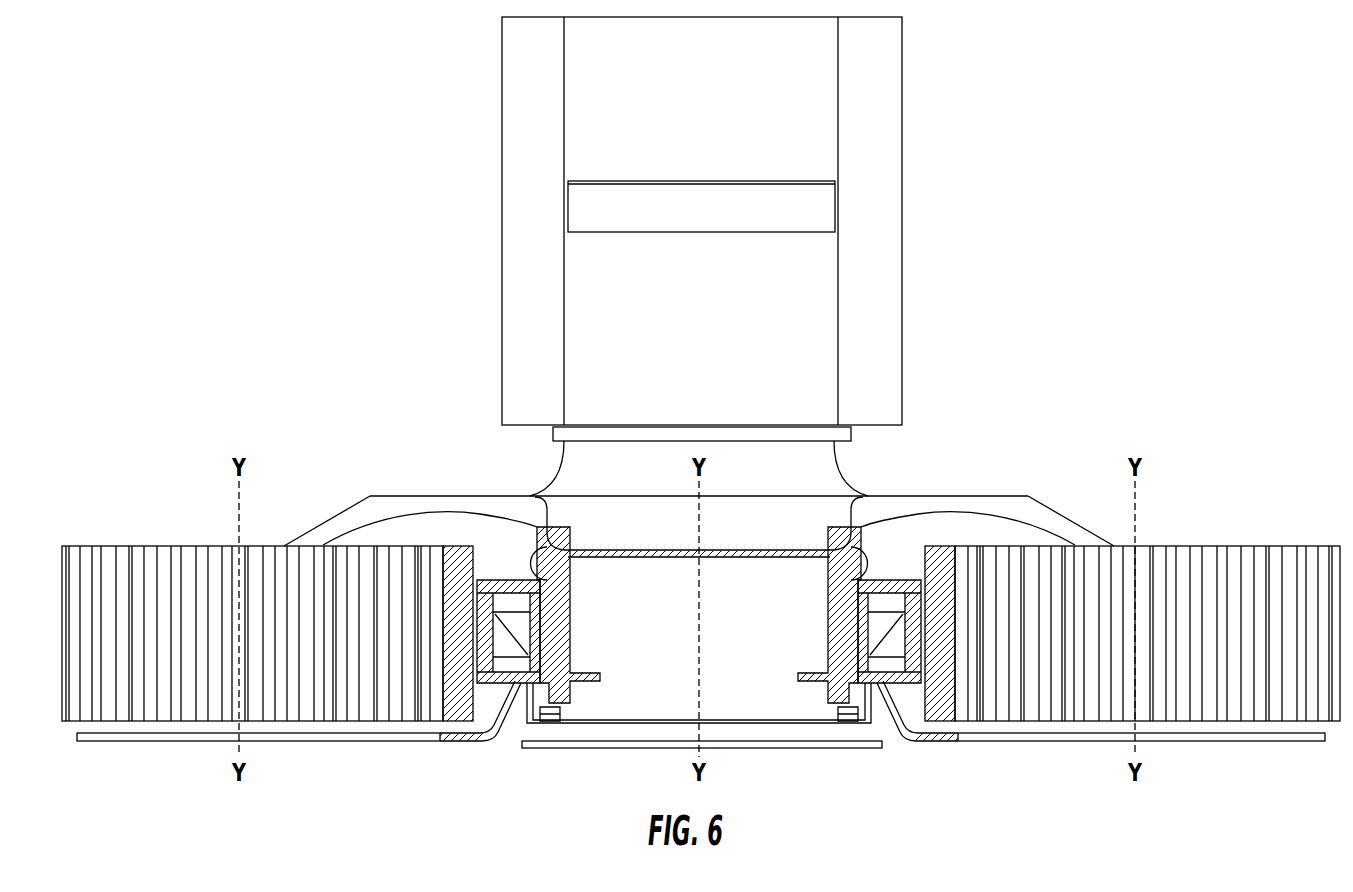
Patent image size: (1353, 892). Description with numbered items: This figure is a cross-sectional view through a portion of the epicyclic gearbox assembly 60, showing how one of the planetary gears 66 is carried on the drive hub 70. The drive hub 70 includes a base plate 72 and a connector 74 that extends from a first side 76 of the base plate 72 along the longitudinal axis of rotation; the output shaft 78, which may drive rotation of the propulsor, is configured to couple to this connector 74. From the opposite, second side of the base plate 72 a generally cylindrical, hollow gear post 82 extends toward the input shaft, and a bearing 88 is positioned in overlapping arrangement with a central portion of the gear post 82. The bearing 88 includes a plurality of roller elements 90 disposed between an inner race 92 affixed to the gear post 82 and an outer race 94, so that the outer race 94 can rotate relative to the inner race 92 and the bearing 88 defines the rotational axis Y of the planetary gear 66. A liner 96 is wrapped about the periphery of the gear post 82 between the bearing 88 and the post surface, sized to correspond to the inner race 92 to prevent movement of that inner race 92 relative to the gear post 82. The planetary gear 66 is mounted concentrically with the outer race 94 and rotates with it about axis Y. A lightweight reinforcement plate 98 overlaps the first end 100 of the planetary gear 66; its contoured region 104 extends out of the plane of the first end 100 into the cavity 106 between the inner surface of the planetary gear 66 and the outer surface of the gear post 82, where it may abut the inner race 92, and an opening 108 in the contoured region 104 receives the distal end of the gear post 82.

The gearbox assembly 60 is at (326, 92).
The planetary gear 66 is at (167, 560).
The drive hub 70 is at (995, 485).
The base plate 72 is at (1057, 509).
The connector 74 is at (575, 463).
The first side 76 is at (391, 496).
The output shaft 78 is at (902, 130).
The gear post 82 is at (866, 716).
The bearing 88 is at (505, 582).
The roller elements 90 is at (865, 590).
The inner race 92 is at (893, 614).
The outer race 94 is at (998, 510).
The liner 96 is at (545, 724).
The reinforcement plate 98 is at (343, 743).
The first end 100 is at (1033, 712).
The contoured region 104 is at (510, 722).
The cavity 106 is at (452, 730).
The opening 108 is at (840, 716).